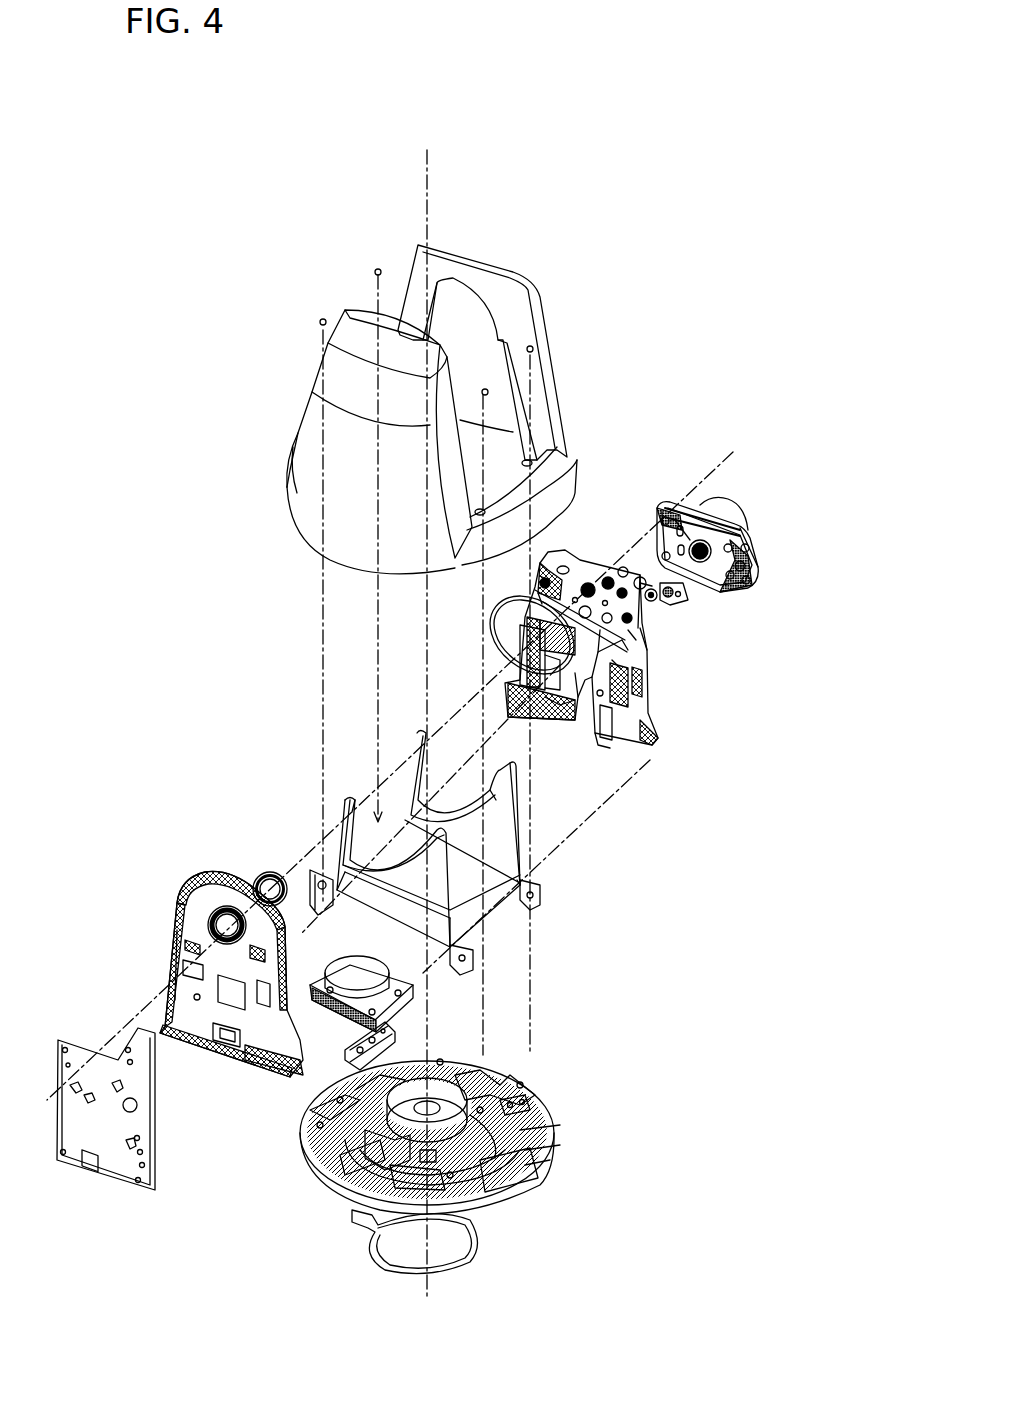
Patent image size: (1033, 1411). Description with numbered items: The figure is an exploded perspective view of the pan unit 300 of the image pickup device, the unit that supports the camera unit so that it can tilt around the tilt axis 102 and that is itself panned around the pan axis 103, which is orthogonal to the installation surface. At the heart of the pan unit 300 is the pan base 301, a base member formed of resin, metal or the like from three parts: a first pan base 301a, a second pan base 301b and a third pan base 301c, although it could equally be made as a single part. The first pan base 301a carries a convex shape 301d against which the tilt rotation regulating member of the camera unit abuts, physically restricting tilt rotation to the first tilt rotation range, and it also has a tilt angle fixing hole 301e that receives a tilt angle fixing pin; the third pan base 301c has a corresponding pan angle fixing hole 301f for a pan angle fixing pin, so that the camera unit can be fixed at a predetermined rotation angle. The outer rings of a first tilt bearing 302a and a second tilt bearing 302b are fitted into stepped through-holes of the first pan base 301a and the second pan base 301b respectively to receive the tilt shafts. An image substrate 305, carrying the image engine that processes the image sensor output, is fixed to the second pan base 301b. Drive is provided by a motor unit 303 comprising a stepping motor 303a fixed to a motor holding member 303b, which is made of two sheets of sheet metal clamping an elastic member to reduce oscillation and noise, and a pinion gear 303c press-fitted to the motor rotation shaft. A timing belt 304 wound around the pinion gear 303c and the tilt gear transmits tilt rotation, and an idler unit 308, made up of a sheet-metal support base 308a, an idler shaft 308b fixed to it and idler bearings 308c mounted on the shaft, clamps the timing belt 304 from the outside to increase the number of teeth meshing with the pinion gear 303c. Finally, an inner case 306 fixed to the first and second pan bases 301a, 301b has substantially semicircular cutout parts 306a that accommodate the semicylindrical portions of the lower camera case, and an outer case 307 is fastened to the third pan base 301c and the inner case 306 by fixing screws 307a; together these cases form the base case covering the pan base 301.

The tilt axis 102 is at (753, 438).
The pan axis 103 is at (434, 140).
The pan unit 300 is at (215, 212).
The pan base 301 is at (612, 756).
The first pan base 301a is at (600, 748).
The second pan base 301b is at (175, 940).
The third pan base 301c is at (545, 1118).
The convex shape 301d is at (538, 578).
The tilt angle fixing hole 301e is at (616, 665).
The pan angle fixing hole 301f is at (540, 1153).
The first tilt bearing 302a is at (563, 725).
The second tilt bearing 302b is at (266, 870).
The motor unit 303 is at (760, 582).
The stepping motor 303a is at (718, 503).
The motor holding member 303b is at (760, 552).
The pinion gear 303c is at (686, 535).
The timing belt 304 is at (498, 622).
The image substrate 305 is at (72, 1042).
The inner case 306 is at (500, 912).
The cutout parts 306a is at (360, 795).
The outer case 307 is at (318, 452).
The fixing screws 307a is at (378, 268).
The idler unit 308 is at (663, 602).
The support base 308a is at (648, 588).
The idler shaft 308b is at (650, 582).
The idler bearings 308c is at (622, 566).